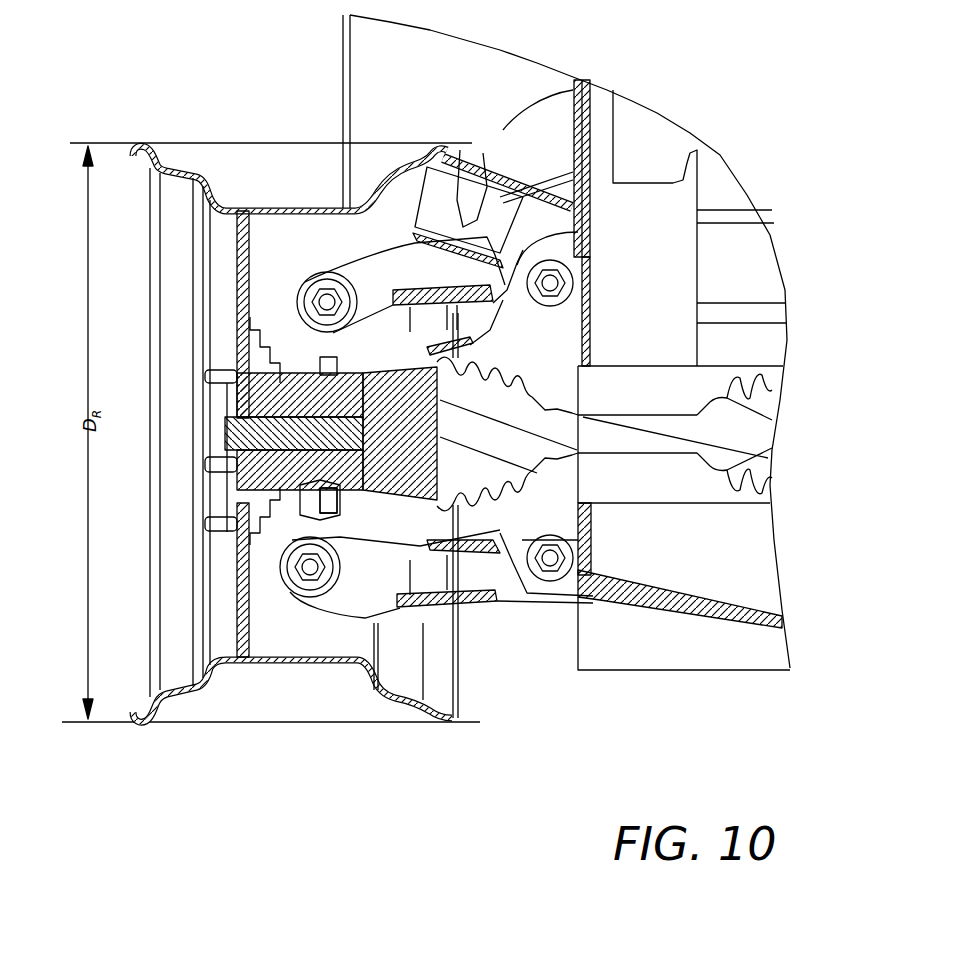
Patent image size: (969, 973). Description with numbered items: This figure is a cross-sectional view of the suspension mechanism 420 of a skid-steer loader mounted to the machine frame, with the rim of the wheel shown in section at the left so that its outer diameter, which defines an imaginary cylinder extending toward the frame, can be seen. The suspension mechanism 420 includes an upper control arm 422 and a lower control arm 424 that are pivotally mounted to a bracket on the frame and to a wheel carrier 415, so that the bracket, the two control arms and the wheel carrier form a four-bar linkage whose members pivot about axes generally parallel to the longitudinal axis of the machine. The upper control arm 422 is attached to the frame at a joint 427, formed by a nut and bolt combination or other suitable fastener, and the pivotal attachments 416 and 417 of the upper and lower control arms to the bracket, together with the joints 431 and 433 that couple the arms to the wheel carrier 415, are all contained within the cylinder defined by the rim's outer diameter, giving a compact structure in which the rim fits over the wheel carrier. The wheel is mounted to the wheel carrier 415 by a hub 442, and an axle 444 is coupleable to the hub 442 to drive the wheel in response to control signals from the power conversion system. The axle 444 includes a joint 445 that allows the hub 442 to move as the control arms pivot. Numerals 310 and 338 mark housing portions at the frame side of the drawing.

The housing 310 is at (740, 622).
The housing wall 338 is at (610, 560).
The wheel carrier 415 is at (313, 523).
The pivotal attachment 416 is at (572, 277).
The pivotal attachment 417 is at (560, 577).
The suspension mechanism 420 is at (503, 104).
The upper control arm 422 is at (387, 277).
The lower control arm 424 is at (407, 580).
The joint 427 is at (530, 417).
The joint 431 is at (325, 290).
The joint 433 is at (307, 577).
The hub 442 is at (300, 485).
The axle 444 is at (605, 447).
The joint 445 is at (560, 323).